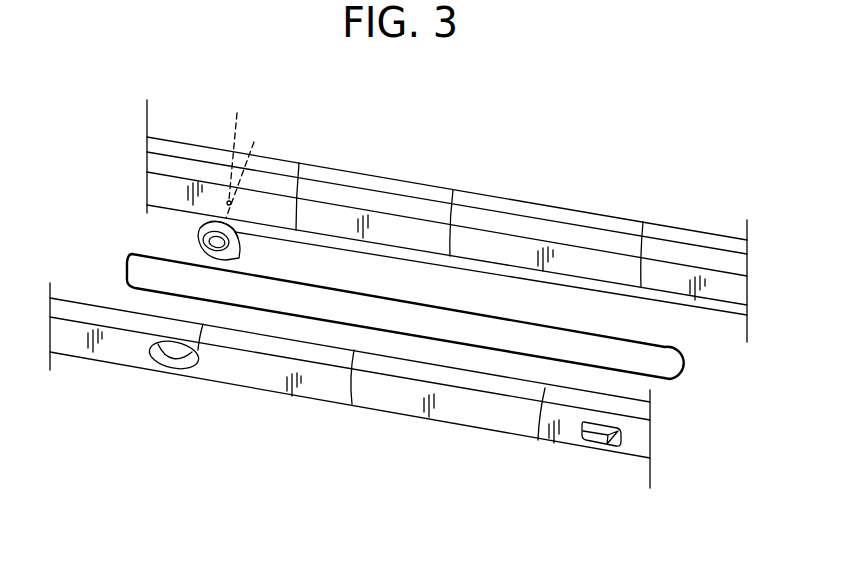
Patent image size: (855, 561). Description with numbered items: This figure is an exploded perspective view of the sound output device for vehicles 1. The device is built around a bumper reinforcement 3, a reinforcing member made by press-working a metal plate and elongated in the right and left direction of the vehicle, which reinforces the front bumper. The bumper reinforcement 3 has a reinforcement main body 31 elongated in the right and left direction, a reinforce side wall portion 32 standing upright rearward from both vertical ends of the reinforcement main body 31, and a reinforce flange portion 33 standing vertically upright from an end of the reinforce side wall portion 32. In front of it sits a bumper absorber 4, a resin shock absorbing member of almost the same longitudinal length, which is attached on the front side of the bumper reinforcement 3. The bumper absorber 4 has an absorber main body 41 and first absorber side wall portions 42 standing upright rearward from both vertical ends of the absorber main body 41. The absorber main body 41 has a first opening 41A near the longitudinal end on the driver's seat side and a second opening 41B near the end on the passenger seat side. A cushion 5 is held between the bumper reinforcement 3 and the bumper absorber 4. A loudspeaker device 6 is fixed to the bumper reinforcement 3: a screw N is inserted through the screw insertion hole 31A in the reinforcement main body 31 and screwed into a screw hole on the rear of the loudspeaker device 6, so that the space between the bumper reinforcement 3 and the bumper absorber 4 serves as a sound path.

The sound output device for vehicles 1 is at (710, 218).
The bumper reinforcement 3 is at (447, 228).
The reinforcement main body 31 is at (415, 218).
The screw insertion hole 31A is at (237, 149).
The reinforce side wall portion 32 is at (527, 228).
The reinforce flange portion 33 is at (585, 215).
The screw N is at (255, 138).
The bumper absorber 4 is at (380, 392).
The absorber main body 41 is at (330, 388).
The first opening 41A is at (166, 365).
The second opening 41B is at (622, 431).
The first absorber side wall portion 42 is at (285, 352).
The cushion 5 is at (684, 366).
The loudspeaker device 6 is at (196, 237).